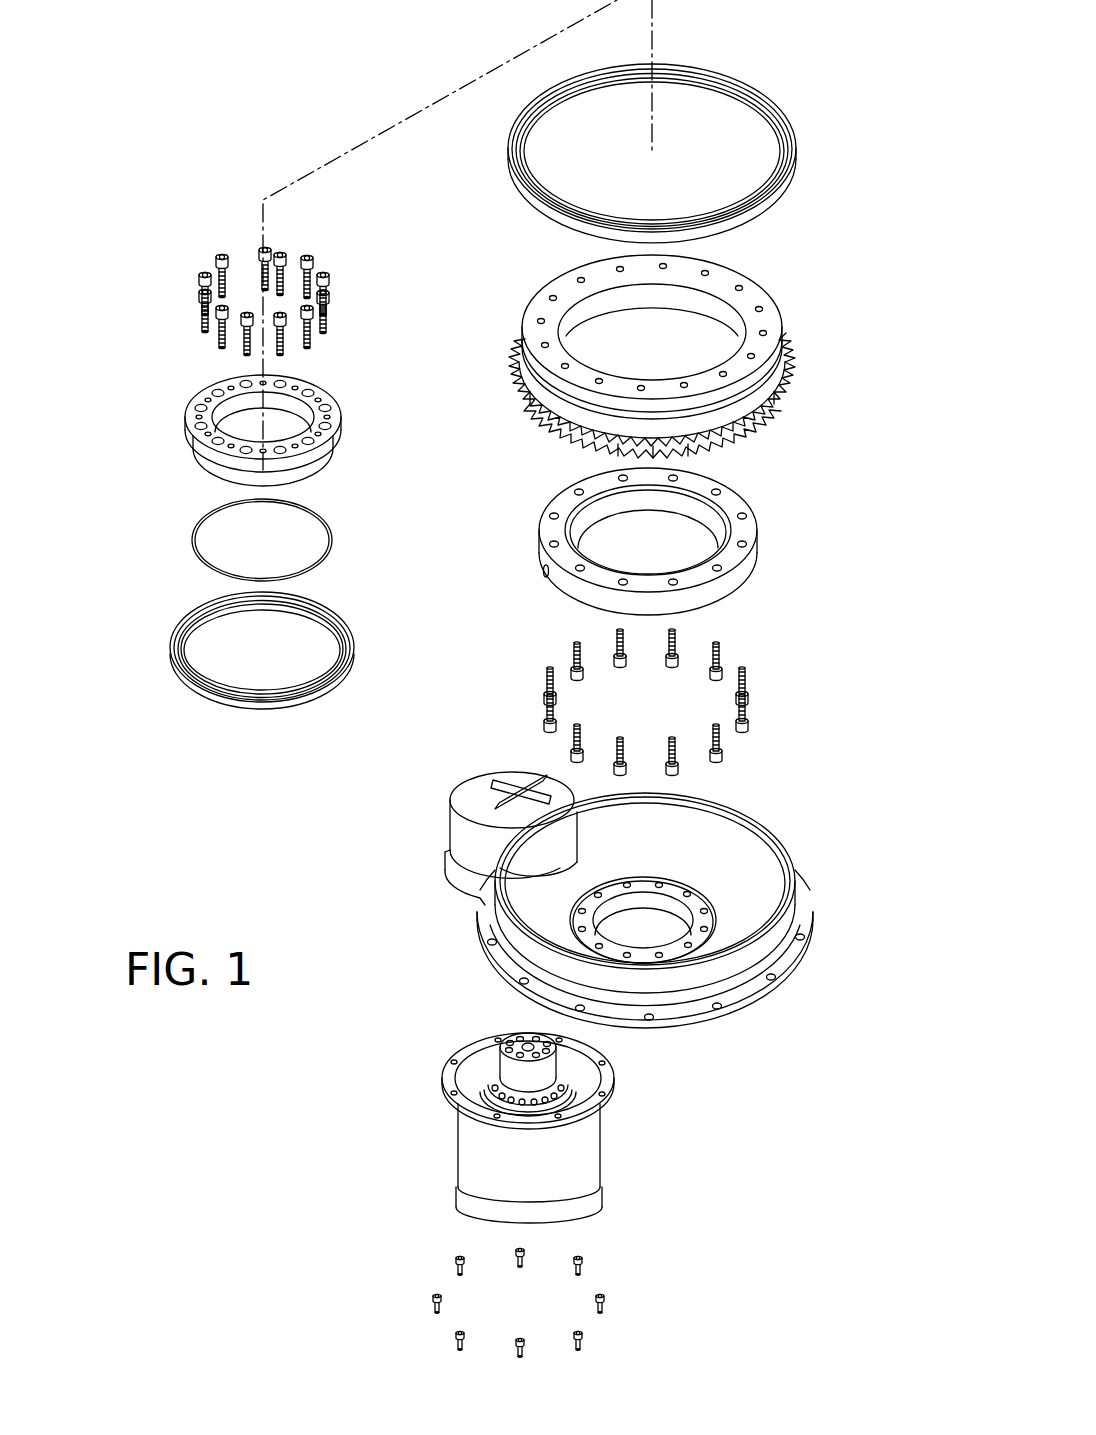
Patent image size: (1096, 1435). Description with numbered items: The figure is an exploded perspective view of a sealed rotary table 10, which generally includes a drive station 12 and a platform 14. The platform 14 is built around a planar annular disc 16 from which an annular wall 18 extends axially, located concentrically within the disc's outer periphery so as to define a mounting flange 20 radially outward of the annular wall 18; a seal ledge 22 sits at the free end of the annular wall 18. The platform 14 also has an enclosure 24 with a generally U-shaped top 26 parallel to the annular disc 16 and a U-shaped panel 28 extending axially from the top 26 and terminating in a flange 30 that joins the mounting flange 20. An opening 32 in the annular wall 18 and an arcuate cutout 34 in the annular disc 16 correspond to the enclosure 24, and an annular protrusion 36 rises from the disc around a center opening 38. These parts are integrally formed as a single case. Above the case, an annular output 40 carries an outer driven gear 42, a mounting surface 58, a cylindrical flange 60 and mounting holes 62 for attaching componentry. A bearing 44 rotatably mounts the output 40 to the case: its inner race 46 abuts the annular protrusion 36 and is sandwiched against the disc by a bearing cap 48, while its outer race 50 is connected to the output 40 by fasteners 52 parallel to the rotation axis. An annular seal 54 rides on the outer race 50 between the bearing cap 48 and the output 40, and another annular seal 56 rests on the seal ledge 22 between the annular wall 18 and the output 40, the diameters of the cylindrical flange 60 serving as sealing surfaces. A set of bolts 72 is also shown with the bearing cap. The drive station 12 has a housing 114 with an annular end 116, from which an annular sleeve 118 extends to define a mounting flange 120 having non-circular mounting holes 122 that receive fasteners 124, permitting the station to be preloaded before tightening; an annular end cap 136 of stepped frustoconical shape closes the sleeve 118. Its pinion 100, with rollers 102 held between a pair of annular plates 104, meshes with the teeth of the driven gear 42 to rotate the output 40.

The sealed rotary table 10 is at (130, 140).
The drive station 12 is at (523, 1182).
The platform 14 is at (693, 125).
The planar annular disc 16 is at (663, 909).
The annular wall 18 is at (752, 960).
The mounting flange 20 is at (740, 985).
The seal ledge 22 is at (767, 840).
The enclosure 24 is at (468, 809).
The top 26 is at (463, 813).
The U-shaped panel 28 is at (463, 843).
The flange 30 is at (452, 880).
The opening 32 is at (533, 853).
The arcuate cutout 34 is at (730, 872).
The annular protrusion 36 is at (643, 878).
The center opening 38 is at (646, 917).
The annular output 40 is at (468, 379).
The outer driven gear 42 is at (795, 385).
The bearing 44 is at (654, 541).
The inner race 46 is at (722, 532).
The bearing cap 48 is at (185, 412).
The outer race 50 is at (548, 532).
The fasteners 52 is at (742, 690).
The annular seal 54 is at (232, 700).
The annular seal 56 is at (797, 143).
The mounting surface 58 is at (671, 329).
The cylindrical flange 60 is at (558, 292).
The mounting holes 62 is at (536, 349).
The bolts 72 is at (262, 248).
The pinion 100 is at (515, 1045).
The rollers 102 is at (457, 1180).
The annular plates 104 is at (510, 1070).
The housing 114 is at (510, 1131).
The annular end 116 is at (575, 1095).
The annular sleeve 118 is at (482, 1170).
The mounting flange 120 is at (586, 1048).
The mounting holes 122 is at (610, 1078).
The fasteners 124 is at (605, 1300).
The annular end cap 136 is at (477, 1221).